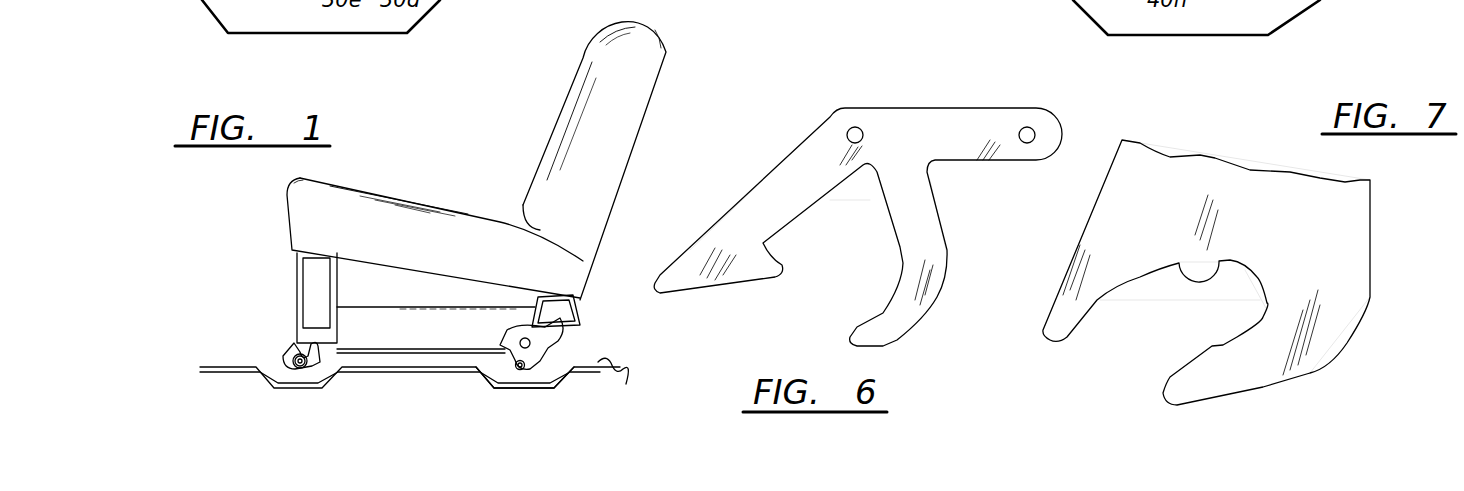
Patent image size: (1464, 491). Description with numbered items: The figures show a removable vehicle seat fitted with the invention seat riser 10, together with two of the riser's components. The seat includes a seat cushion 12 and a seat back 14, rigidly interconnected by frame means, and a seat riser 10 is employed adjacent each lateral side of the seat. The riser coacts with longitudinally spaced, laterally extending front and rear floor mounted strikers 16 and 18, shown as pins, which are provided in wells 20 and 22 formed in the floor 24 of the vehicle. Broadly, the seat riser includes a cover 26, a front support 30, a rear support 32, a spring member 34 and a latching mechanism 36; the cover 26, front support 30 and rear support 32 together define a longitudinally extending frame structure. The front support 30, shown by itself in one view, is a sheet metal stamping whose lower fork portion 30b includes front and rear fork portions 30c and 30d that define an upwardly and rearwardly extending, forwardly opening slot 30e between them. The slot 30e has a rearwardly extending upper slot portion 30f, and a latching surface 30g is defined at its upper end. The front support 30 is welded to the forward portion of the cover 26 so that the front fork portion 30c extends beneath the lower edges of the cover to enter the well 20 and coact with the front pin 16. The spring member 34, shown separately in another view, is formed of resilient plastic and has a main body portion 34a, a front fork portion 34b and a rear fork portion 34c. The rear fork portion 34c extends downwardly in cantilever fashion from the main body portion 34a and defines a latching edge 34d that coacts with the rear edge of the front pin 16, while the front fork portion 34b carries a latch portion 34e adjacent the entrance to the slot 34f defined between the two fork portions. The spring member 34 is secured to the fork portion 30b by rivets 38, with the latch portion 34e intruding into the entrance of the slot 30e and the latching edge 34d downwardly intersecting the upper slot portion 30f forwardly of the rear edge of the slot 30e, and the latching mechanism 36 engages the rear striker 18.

In FIG. 1, the seat riser 10 is at (266, 270).
In FIG. 1, the seat cushion 12 is at (283, 212).
In FIG. 1, the seat back 14 is at (650, 67).
In FIG. 1, the front striker 16 is at (295, 364).
In FIG. 1, the rear striker 18 is at (523, 369).
In FIG. 1, the front well 20 is at (262, 375).
In FIG. 1, the rear well 22 is at (490, 378).
In FIG. 1, the floor 24 is at (629, 374).
In FIG. 1, the cover 26 is at (435, 310).
In FIG. 1, the front support 30 is at (320, 292).
In FIG. 7, the front support 30 is at (1206, 265).
In FIG. 7, the lower fork portion 30b is at (1215, 155).
In FIG. 7, the front fork portion 30c is at (1060, 313).
In FIG. 7, the rear fork portion 30d is at (1323, 372).
In FIG. 7, the slot 30e is at (1190, 313).
In FIG. 7, the upper slot portion 30f is at (1255, 284).
In FIG. 7, the latching surface 30g is at (1190, 273).
In FIG. 1, the rear support 32 is at (578, 310).
In FIG. 1, the spring member 34 is at (298, 355).
In FIG. 6, the spring member 34 is at (788, 153).
In FIG. 6, the main body portion 34a is at (963, 151).
In FIG. 6, the front fork portion 34b is at (733, 206).
In FIG. 6, the rear fork portion 34c is at (948, 249).
In FIG. 6, the latching edge 34d is at (898, 247).
In FIG. 6, the latch portion 34e is at (745, 286).
In FIG. 6, the slot 34f is at (837, 264).
In FIG. 1, the latching mechanism 36 is at (562, 348).
In FIG. 6, the rivets 38 is at (858, 128).